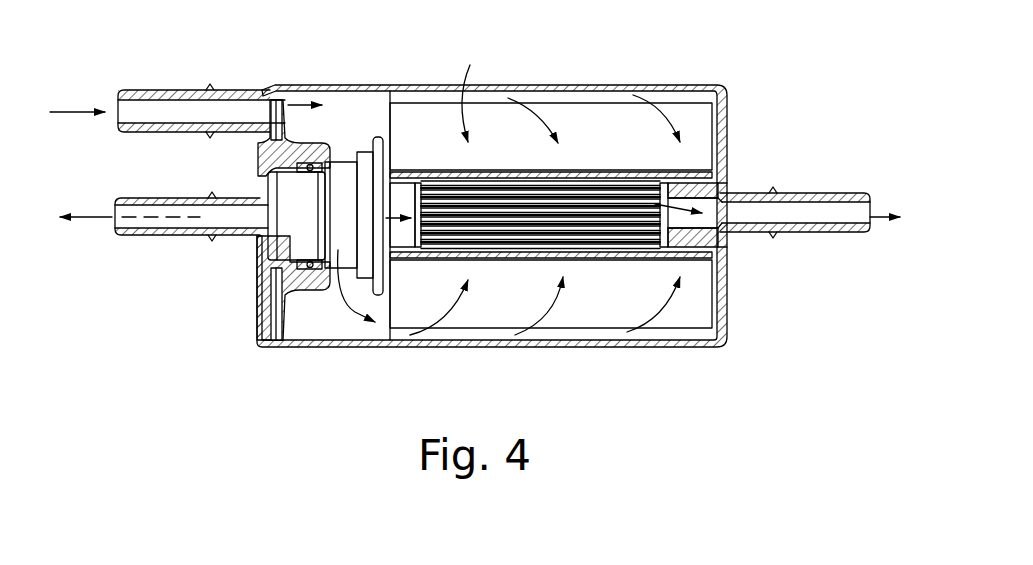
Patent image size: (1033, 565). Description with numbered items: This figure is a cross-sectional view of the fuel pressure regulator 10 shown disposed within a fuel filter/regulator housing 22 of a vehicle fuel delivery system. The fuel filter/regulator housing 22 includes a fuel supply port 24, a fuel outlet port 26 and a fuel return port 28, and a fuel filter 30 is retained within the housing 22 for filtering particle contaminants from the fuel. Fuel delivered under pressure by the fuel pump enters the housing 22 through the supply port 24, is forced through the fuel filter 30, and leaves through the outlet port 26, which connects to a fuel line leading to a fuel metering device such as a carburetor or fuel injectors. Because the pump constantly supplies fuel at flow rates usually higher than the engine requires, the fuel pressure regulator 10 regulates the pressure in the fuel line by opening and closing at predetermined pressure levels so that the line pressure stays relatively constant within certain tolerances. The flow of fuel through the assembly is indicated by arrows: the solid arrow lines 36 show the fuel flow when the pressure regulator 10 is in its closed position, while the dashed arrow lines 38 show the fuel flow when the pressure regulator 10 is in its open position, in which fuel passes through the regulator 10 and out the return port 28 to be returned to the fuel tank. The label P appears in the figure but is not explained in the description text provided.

The fuel pressure regulator 10 is at (302, 223).
The fuel filter/regulator housing 22 is at (578, 85).
The fuel supply port 24 is at (170, 90).
The fuel outlet port 26 is at (843, 193).
The fuel return port 28 is at (160, 237).
The fuel filter 30 is at (610, 120).
The solid arrow lines 36 is at (70, 112).
The dashed arrow lines 38 is at (92, 220).
The pleated filter media P is at (465, 212).